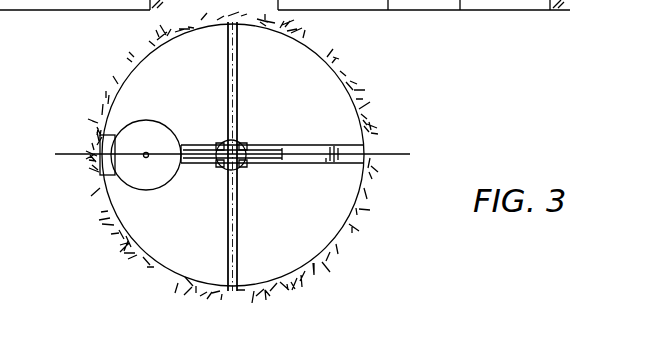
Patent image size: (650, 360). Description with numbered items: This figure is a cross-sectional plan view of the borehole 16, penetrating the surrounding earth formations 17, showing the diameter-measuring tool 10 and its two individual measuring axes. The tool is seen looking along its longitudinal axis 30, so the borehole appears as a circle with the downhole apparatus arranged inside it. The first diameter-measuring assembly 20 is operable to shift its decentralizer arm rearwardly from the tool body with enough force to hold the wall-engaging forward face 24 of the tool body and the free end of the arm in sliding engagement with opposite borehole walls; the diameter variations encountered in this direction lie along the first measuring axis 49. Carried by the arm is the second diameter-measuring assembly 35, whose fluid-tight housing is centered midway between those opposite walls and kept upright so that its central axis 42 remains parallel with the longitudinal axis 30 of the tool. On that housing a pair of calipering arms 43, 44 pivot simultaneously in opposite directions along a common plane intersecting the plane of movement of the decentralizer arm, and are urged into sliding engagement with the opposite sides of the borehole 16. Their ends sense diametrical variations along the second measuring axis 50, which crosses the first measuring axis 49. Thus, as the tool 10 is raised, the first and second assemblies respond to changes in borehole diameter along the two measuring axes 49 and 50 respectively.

The diameter-measuring tool 10 is at (200, 156).
The borehole 16 is at (348, 102).
The earth formations 17 is at (372, 262).
The first diameter-measuring assembly 20 is at (168, 127).
The wall-engaging forward face 24 is at (100, 138).
The longitudinal axis 30 is at (144, 158).
The second diameter-measuring assembly 35 is at (255, 178).
The central axis 42 is at (238, 142).
The calipering arm 43 is at (237, 252).
The calipering arm 44 is at (238, 72).
The first measuring axis 49 is at (58, 155).
The second measuring axis 50 is at (228, 52).